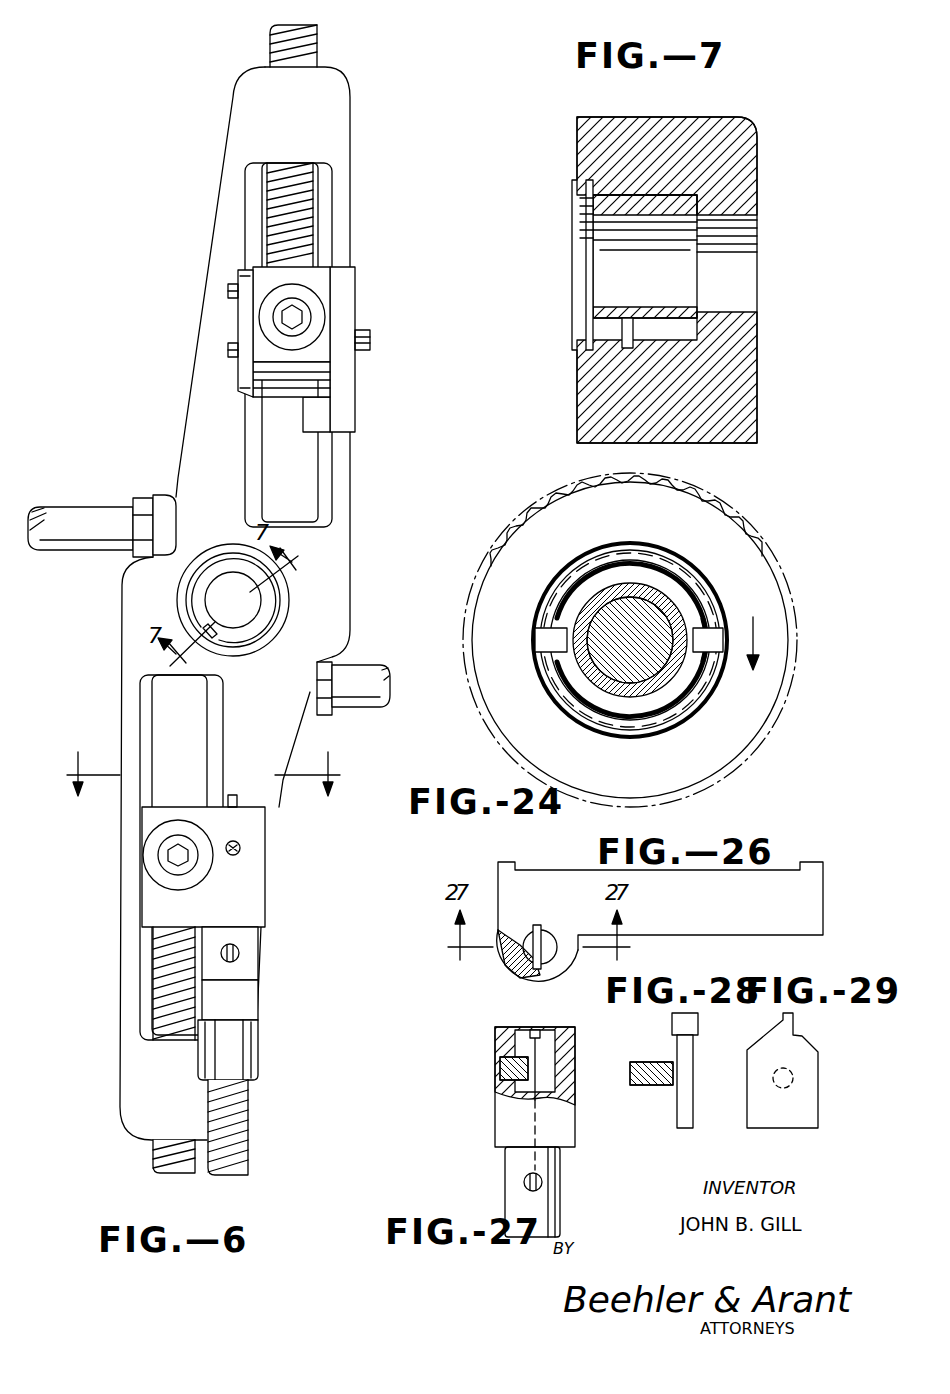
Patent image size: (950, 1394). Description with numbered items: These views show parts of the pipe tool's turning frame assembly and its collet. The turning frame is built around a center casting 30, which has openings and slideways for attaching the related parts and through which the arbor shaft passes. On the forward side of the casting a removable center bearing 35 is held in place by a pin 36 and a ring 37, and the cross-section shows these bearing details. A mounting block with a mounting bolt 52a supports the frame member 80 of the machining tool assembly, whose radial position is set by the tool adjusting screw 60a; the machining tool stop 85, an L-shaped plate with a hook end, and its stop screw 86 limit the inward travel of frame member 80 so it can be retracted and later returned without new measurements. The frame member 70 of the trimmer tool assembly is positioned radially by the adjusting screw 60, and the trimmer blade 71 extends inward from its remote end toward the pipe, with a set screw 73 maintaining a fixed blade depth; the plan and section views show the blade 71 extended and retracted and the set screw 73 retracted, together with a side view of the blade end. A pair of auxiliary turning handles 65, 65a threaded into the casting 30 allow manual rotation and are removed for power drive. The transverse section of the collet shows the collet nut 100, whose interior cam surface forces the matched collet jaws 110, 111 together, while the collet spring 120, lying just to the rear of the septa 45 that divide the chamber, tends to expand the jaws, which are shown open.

In FIG. 6, the center casting 30 is at (200, 434).
In FIG. 7, the center casting 30 is at (748, 143).
In FIG. 6, the center bearing 35 is at (264, 597).
In FIG. 7, the center bearing 35 is at (690, 212).
In FIG. 6, the pin 36 is at (212, 645).
In FIG. 7, the pin 36 is at (622, 345).
In FIG. 6, the ring 37 is at (276, 622).
In FIG. 7, the ring 37 is at (588, 303).
In FIG. 24, the septa 45 is at (540, 642).
In FIG. 6, the mounting bolt 52a is at (224, 327).
In FIG. 6, the adjusting screw 60 is at (170, 952).
In FIG. 6, the tool adjusting screw 60a is at (310, 213).
In FIG. 6, the auxiliary turning handle 65 is at (352, 672).
In FIG. 6, the auxiliary turning handle 65a is at (88, 528).
In FIG. 6, the frame member 70 is at (166, 857).
In FIG. 27, the trimmer blade 71 is at (542, 1052).
In FIG. 28, the trimmer blade 71 is at (678, 1106).
In FIG. 29, the trimmer blade 71 is at (750, 1103).
In FIG. 6, the set screw 73 is at (241, 848).
In FIG. 26, the set screw 73 is at (520, 940).
In FIG. 27, the set screw 73 is at (503, 1062).
In FIG. 28, the set screw 73 is at (643, 1066).
In FIG. 6, the frame member 80 is at (226, 308).
In FIG. 6, the machining tool stop 85 is at (348, 290).
In FIG. 6, the stop screw 86 is at (368, 346).
In FIG. 24, the collet nut 100 is at (745, 535).
In FIG. 24, the collet jaw 110 is at (560, 598).
In FIG. 24, the collet jaw 111 is at (700, 700).
In FIG. 24, the collet spring 120 is at (560, 626).